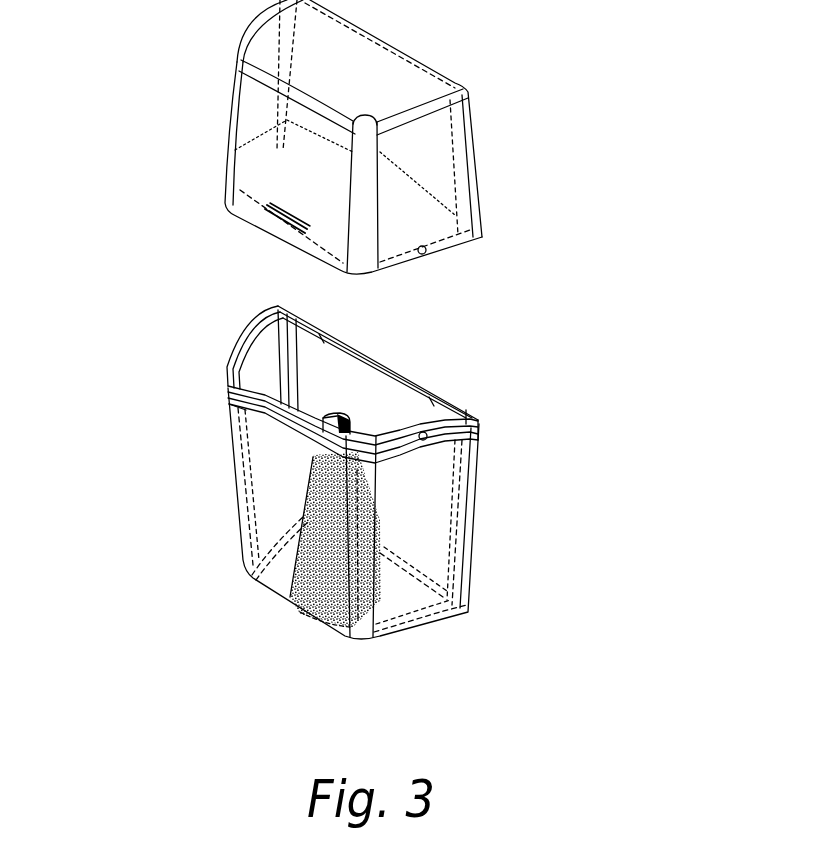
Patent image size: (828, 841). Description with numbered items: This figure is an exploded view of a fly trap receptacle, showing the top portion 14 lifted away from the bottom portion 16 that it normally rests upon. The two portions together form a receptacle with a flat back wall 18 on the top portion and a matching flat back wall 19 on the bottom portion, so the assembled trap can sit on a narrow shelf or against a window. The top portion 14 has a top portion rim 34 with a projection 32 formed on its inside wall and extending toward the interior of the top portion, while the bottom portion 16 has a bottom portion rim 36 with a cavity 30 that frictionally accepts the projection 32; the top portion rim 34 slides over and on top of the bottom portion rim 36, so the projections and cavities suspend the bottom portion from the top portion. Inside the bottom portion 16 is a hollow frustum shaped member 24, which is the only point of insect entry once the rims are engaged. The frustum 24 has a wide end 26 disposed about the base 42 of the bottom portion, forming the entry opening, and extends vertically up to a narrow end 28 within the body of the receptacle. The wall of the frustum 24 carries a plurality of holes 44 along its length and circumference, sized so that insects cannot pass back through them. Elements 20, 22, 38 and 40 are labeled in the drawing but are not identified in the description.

The top portion 14 is at (522, 151).
The bottom portion 16 is at (510, 484).
The flat back wall 18 is at (427, 163).
The flat back wall 19 is at (425, 553).
The container end wall 20 is at (235, 492).
The lid end wall 22 is at (258, 180).
The hollow frustum shaped member 24 is at (290, 593).
The wide end 26 is at (330, 620).
The narrow end 28 is at (323, 418).
The cavity 30 is at (468, 420).
The projection 32 is at (432, 256).
The top portion rim 34 is at (230, 202).
The bottom portion rim 36 is at (228, 368).
The rim lip 38 is at (240, 392).
The rim 40 is at (277, 304).
The base 42 is at (382, 620).
The plurality of holes 44 is at (312, 525).